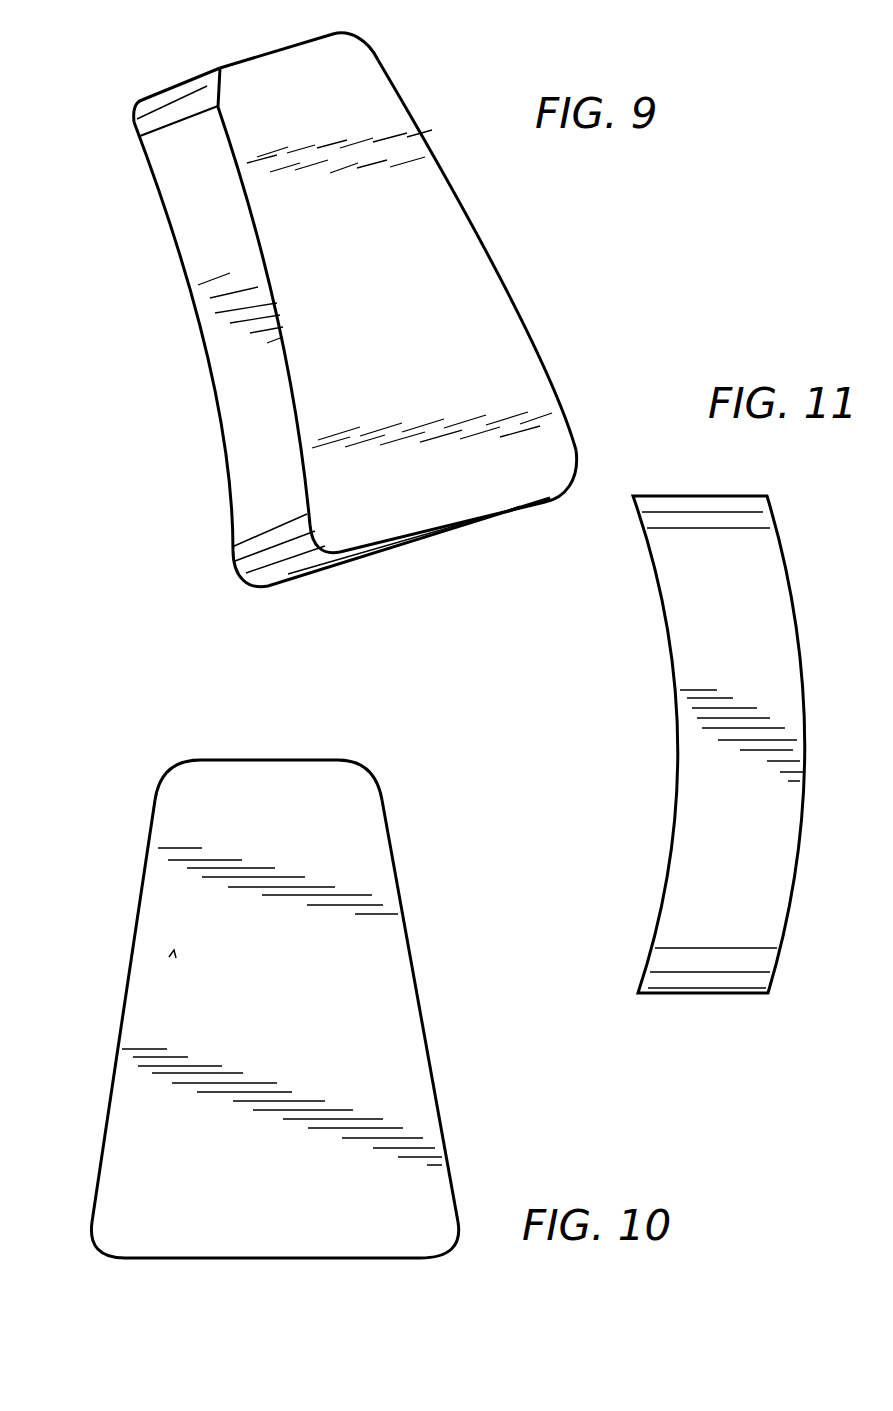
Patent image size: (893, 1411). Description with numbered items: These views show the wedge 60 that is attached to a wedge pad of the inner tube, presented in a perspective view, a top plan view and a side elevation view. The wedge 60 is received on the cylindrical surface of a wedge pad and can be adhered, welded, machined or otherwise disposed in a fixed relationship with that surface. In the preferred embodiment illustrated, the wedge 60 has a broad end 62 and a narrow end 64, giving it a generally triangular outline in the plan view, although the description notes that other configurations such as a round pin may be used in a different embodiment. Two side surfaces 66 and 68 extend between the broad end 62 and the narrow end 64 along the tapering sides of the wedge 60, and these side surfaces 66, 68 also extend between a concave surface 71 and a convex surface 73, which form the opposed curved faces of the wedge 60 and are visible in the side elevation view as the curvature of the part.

In FIG. 9, the wedge 60 is at (440, 342).
In FIG. 10, the wedge 60 is at (441, 841).
In FIG. 9, the broad end 62 is at (463, 493).
In FIG. 10, the broad end 62 is at (412, 1260).
In FIG. 9, the narrow end 64 is at (237, 75).
In FIG. 10, the narrow end 64 is at (309, 758).
In FIG. 9, the side surface 66 is at (227, 262).
In FIG. 10, the side surface 66 is at (140, 900).
In FIG. 9, the side surface 68 is at (528, 253).
In FIG. 10, the side surface 68 is at (420, 1003).
In FIG. 9, the concave surface 71 is at (206, 437).
In FIG. 10, the concave surface 71 is at (168, 957).
In FIG. 9, the convex surface 73 is at (420, 121).
In FIG. 10, the convex surface 73 is at (418, 1121).